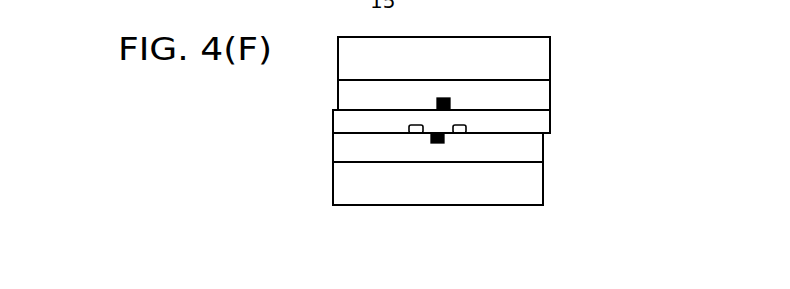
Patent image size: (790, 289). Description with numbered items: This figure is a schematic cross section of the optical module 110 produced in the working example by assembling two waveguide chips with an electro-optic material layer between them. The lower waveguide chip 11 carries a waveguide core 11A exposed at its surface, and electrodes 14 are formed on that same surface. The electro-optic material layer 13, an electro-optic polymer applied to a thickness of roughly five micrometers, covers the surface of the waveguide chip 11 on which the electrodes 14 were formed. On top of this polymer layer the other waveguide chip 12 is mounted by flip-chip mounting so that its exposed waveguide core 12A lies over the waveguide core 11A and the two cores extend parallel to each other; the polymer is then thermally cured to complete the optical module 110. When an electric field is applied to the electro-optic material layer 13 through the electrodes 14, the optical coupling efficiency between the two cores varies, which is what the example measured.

The waveguide chip 11 is at (375, 210).
The waveguide core 11A is at (437, 143).
The waveguide chip 12 is at (562, 53).
The waveguide core 12A is at (446, 98).
The electro-optic material layer 13 is at (349, 120).
The electrodes 14 is at (460, 133).
The optical module 110 is at (563, 195).